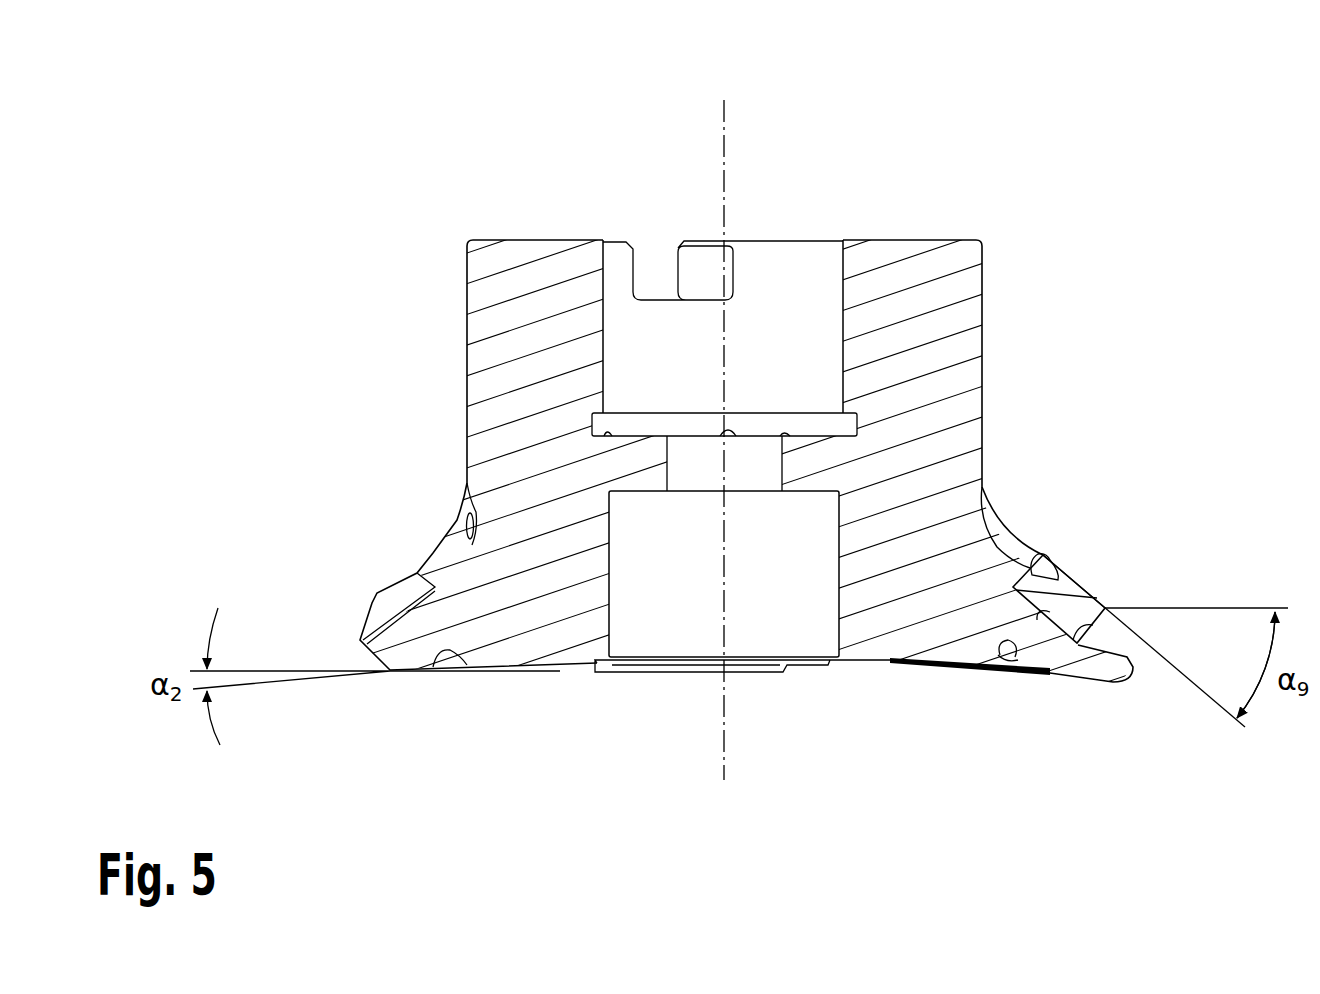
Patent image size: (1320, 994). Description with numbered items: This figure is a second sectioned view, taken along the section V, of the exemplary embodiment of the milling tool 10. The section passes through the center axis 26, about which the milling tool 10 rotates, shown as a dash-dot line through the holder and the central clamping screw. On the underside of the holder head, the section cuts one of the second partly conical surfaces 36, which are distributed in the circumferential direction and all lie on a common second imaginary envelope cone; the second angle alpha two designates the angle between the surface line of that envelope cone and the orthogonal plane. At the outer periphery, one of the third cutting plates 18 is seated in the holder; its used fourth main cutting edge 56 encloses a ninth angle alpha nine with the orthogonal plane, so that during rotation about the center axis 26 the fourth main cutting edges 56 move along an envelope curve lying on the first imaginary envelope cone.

The milling tool 10 is at (1028, 125).
The third cutting plates 18 is at (1106, 589).
The center axis 26 is at (724, 172).
The second partly conical surfaces 36 is at (414, 675).
The fourth main cutting edges 56 is at (1067, 580).